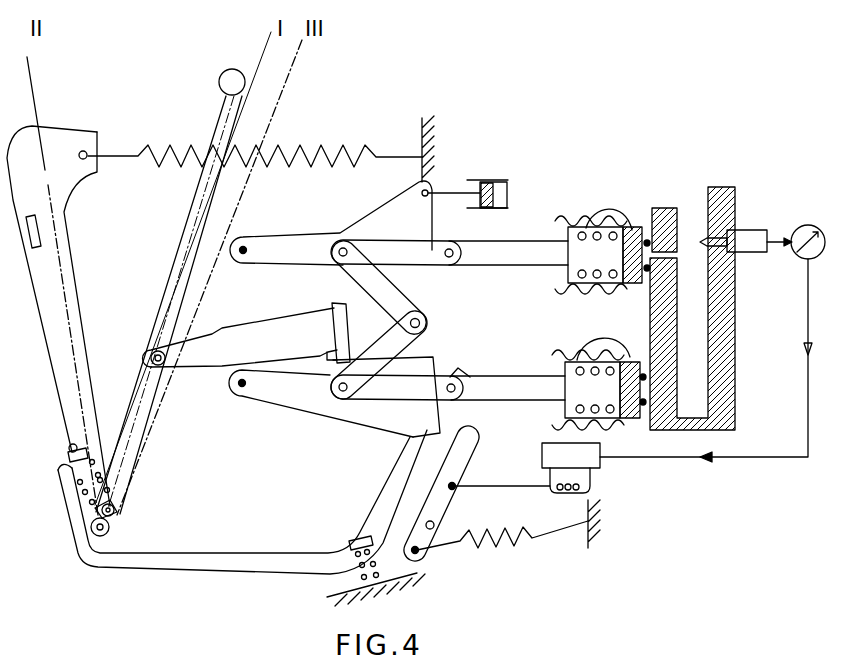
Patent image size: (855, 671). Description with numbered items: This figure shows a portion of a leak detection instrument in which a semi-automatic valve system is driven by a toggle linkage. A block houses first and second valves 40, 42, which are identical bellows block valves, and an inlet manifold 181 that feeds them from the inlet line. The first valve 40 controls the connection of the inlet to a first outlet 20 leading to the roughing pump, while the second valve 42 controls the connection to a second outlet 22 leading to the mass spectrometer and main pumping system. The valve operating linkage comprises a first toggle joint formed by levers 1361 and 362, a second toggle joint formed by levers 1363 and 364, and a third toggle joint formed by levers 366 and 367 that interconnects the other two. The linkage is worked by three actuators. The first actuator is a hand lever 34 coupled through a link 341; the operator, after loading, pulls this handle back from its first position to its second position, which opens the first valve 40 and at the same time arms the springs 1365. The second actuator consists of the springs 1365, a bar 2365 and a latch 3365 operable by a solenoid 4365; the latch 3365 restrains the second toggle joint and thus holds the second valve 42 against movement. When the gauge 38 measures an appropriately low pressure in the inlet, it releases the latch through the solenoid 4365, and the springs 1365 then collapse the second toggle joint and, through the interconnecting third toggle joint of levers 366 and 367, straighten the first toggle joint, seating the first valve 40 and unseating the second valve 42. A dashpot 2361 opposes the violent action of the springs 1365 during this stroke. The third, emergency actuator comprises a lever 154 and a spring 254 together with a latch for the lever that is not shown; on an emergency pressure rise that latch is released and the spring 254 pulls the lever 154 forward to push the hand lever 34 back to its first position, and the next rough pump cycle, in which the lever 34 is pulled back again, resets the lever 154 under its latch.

The lever 154 is at (70, 128).
The spring 254 is at (183, 146).
The lever 34 is at (188, 248).
The lever 1361 is at (262, 237).
The lever 362 is at (440, 250).
The dashpot 2361 is at (489, 183).
The lever 366 is at (393, 298).
The lever 367 is at (407, 330).
The lever 364 is at (407, 390).
The link 341 is at (267, 332).
The lever 1363 is at (286, 398).
The latch 3365 is at (467, 437).
The bar 2365 is at (242, 570).
The springs 1365 is at (105, 480).
The first outlet 20 is at (612, 213).
The first valve 40 is at (633, 226).
The second outlet 22 is at (604, 336).
The second valve 42 is at (632, 420).
The inlet manifold 181 is at (695, 320).
The gauge 38 is at (808, 228).
The solenoid 4365 is at (592, 473).